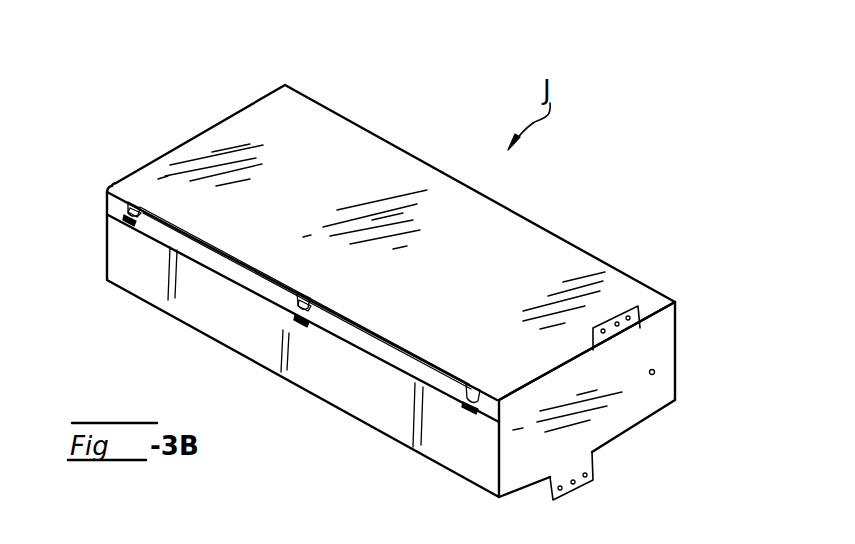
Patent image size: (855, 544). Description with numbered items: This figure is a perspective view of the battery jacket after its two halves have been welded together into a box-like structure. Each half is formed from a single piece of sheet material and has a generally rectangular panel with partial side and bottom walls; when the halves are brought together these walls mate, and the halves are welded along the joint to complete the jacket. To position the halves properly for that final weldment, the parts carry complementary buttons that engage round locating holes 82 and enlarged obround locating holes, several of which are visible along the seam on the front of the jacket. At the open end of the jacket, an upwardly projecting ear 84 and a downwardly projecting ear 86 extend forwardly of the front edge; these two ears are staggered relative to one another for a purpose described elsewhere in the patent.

The round locating holes 82 is at (468, 385).
The upwardly projecting ear 84 is at (605, 322).
The downwardly projecting ear 86 is at (573, 494).